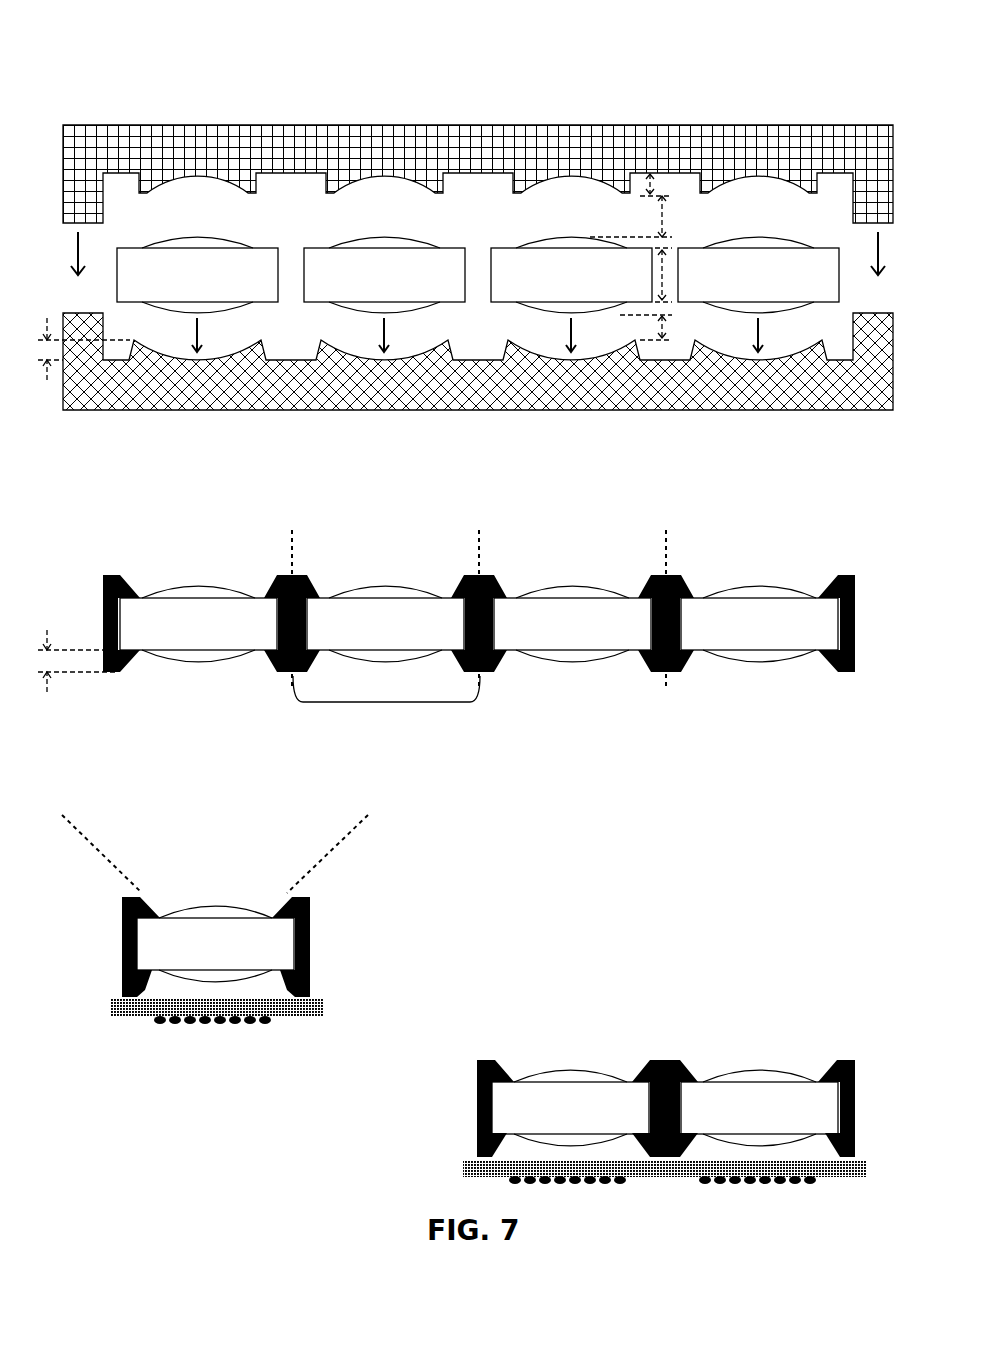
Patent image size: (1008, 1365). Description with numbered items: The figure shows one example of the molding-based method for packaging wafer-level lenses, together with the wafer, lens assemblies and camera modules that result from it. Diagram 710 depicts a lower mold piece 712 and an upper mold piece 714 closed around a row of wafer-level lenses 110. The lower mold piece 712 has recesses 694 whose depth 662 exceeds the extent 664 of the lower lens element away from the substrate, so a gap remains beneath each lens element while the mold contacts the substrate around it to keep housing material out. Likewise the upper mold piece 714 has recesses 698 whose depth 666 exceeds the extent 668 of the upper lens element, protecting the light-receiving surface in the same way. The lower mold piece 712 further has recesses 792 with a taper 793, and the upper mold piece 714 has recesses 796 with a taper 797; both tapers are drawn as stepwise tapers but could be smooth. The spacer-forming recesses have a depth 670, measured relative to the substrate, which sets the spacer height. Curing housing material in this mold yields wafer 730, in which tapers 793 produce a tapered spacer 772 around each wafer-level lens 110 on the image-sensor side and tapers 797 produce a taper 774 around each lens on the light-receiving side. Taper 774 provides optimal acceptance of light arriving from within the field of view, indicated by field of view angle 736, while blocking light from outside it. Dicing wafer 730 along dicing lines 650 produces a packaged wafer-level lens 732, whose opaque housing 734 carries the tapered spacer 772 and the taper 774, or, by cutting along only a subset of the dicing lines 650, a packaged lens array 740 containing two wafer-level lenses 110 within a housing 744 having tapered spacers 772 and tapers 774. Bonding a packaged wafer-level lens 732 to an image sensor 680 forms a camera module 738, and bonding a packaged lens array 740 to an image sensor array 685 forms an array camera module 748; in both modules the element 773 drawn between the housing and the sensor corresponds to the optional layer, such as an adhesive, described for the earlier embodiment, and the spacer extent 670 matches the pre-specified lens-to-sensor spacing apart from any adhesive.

The diagram 710 is at (92, 55).
The upper mold piece 714 is at (800, 125).
The lower mold piece 712 is at (780, 410).
The wafer-level lens 110 is at (247, 231).
The recess 796 is at (478, 170).
The recess 698 is at (563, 172).
The depth 666 is at (652, 170).
The extent 668 is at (668, 205).
The taper 797 is at (494, 196).
The taper 793 is at (494, 352).
The depth 670 is at (47, 378).
The recess 792 is at (484, 372).
The recess 694 is at (563, 408).
The depth 662 is at (636, 345).
The extent 664 is at (668, 340).
The wafer 730 is at (73, 612).
The dicing line 650 is at (290, 540).
The taper 774 is at (130, 585).
The tapered spacer 772 is at (135, 665).
The packaged wafer-level lens 732 is at (387, 702).
The field of view angle 736 is at (102, 855).
The opaque housing 734 is at (122, 905).
The image sensor 680 is at (112, 1005).
The bottom surface 773 is at (315, 1000).
The camera module 738 is at (440, 833).
The array camera module 748 is at (839, 935).
The packaged lens array 740 is at (443, 1100).
The housing 744 is at (485, 1060).
The image sensor array 685 is at (867, 1172).